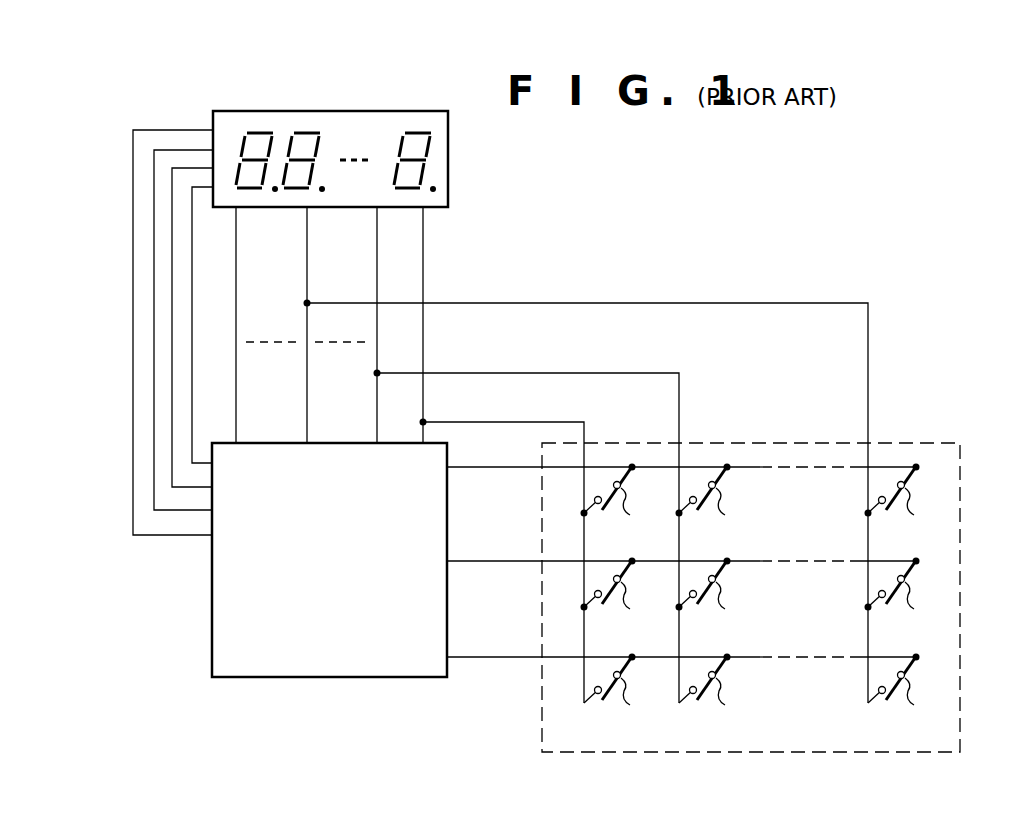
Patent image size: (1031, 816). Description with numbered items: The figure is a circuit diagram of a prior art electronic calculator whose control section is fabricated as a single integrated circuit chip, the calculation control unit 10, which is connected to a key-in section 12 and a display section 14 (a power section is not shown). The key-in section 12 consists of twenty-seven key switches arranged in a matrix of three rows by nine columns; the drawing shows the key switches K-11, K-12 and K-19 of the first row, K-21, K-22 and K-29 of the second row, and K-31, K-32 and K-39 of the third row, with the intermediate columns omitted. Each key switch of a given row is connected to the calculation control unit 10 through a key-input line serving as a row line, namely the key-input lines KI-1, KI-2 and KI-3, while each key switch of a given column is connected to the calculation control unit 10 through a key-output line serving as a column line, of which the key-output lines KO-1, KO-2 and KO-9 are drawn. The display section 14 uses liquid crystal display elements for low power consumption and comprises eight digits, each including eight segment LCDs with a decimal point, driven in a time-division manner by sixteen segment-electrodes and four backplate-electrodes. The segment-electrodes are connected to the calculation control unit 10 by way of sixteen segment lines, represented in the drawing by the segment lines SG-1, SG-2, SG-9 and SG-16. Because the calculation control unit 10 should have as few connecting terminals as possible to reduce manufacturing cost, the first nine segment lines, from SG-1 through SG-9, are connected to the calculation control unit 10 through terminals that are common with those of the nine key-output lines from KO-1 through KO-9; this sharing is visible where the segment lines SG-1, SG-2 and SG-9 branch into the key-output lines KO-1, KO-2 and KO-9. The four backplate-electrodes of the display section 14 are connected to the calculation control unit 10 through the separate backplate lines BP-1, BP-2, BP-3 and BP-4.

The calculation control unit 10 is at (337, 680).
The key-in section 12 is at (962, 450).
The display section 14 is at (352, 111).
The backplate line BP-1 is at (193, 380).
The backplate line BP-2 is at (172, 422).
The backplate line BP-3 is at (153, 232).
The backplate line BP-4 is at (133, 317).
The segment line SG-1 is at (423, 257).
The segment line SG-2 is at (377, 255).
The segment line SG-9 is at (307, 270).
The segment line SG-16 is at (236, 245).
The key-output line KO-1 is at (473, 422).
The key-output line KO-2 is at (590, 373).
The key-output line KO-9 is at (868, 356).
The key-input line KI-1 is at (487, 469).
The key-input line KI-2 is at (487, 563).
The key-input line KI-3 is at (487, 659).
The key switch K-11 is at (617, 501).
The key switch K-12 is at (716, 501).
The key switch K-19 is at (903, 499).
The key switch K-21 is at (622, 592).
The key switch K-22 is at (713, 592).
The key switch K-29 is at (903, 591).
The key switch K-31 is at (619, 690).
The key switch K-32 is at (717, 690).
The key switch K-39 is at (904, 689).